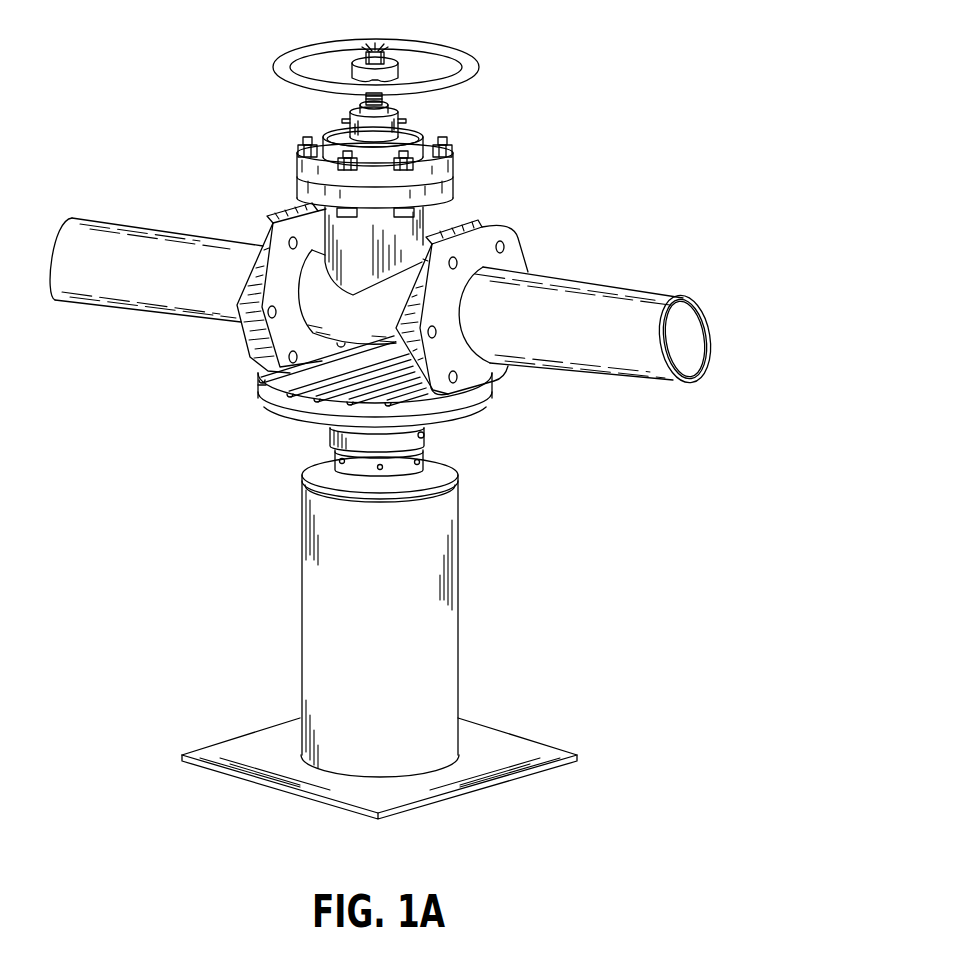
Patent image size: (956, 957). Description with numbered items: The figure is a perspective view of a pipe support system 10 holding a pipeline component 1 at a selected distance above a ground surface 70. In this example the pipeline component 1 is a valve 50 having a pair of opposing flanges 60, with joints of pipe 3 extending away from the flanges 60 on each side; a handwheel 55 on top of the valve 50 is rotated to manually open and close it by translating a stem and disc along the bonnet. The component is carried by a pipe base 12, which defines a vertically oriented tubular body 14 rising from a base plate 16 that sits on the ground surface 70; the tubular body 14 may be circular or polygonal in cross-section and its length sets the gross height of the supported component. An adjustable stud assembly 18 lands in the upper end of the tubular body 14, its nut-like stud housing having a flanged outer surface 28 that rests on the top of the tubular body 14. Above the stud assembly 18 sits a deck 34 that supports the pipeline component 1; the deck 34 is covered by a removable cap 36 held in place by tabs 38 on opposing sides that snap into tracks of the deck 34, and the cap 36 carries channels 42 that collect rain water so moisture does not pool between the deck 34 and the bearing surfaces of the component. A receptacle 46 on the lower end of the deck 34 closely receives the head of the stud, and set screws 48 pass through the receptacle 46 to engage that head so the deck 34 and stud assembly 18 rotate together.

The pipeline component 1 is at (356, 327).
The joints of pipe 3 is at (162, 290).
The pipe support system 10 is at (117, 393).
The pipe base 12 is at (242, 585).
The tubular body 14 is at (330, 575).
The base plate 16 is at (240, 740).
The adjustable stud assembly 18 is at (288, 442).
The flanged outer surface 28 is at (455, 470).
The deck 34 is at (259, 416).
The removable cap 36 is at (252, 370).
The tabs 38 is at (430, 428).
The channels 42 is at (262, 390).
The receptacle 46 is at (310, 466).
The set screws 48 is at (425, 438).
The valve 50 is at (222, 122).
The handwheel 55 is at (463, 47).
The flanges 60 is at (273, 222).
The ground surface 70 is at (639, 811).